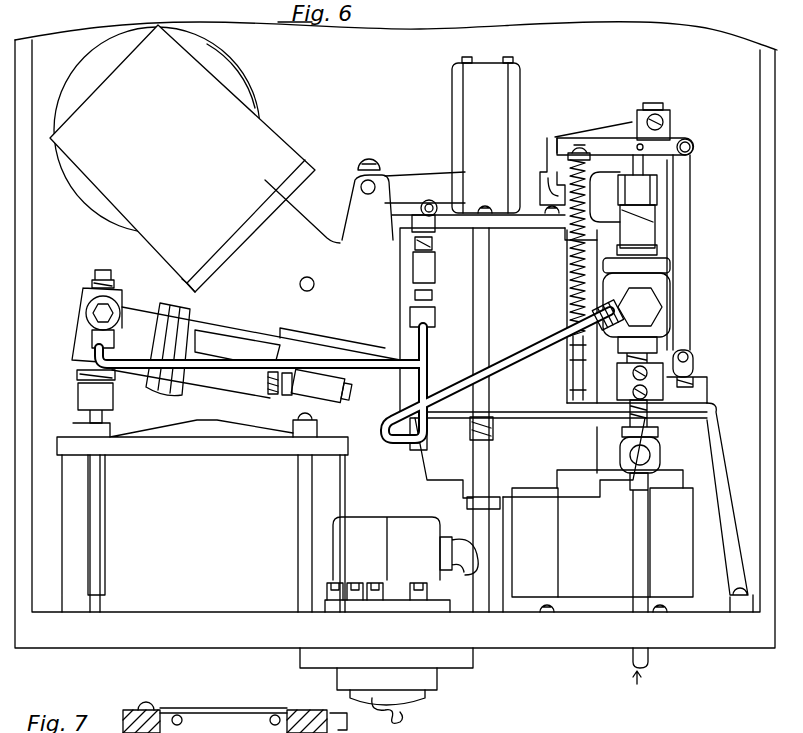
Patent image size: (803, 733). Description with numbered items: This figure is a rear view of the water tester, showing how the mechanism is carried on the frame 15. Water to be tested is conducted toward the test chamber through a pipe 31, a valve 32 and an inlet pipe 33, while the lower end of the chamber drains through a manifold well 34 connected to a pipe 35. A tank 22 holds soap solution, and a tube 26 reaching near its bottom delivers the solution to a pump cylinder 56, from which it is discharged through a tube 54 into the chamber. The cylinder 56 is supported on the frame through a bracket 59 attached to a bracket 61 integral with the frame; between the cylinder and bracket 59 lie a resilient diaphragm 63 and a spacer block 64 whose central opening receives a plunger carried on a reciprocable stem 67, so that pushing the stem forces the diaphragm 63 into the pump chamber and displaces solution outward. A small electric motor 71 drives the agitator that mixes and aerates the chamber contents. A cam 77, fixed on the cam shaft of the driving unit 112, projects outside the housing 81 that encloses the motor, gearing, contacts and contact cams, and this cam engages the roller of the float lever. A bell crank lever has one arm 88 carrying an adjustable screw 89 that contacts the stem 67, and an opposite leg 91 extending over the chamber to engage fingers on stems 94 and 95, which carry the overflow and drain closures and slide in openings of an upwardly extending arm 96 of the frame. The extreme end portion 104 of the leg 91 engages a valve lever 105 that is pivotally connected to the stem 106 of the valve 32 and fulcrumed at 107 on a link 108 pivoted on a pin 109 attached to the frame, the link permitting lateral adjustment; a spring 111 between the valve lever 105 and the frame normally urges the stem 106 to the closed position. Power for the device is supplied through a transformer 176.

The frame 15 is at (713, 480).
The tank 22 is at (193, 537).
The tube 26 is at (107, 500).
The pipe 31 is at (445, 397).
The valve 32 is at (662, 302).
The inlet pipe 33 is at (648, 663).
The manifold well 34 is at (527, 458).
The pipe 35 is at (402, 715).
The tube 54 is at (430, 198).
The pump cylinder 56 is at (107, 346).
The bracket 59 is at (240, 377).
The bracket 61 is at (302, 235).
The resilient diaphragm 63 is at (157, 395).
The spacer block 64 is at (165, 392).
The reciprocable stem 67 is at (270, 390).
The electric motor 71 is at (623, 205).
The cam 77 is at (222, 67).
The housing 81 is at (182, 158).
The arm 88 is at (321, 385).
The adjustable screw 89 is at (290, 392).
The leg 91 is at (395, 182).
The stem 94 is at (515, 60).
The stem 95 is at (462, 58).
The arm 96 is at (486, 138).
The end portion 104 is at (545, 182).
The valve lever 105 is at (600, 143).
The stem 106 is at (635, 128).
The fulcrum 107 is at (692, 138).
The link 108 is at (685, 193).
The pin 109 is at (693, 365).
The spring 111 is at (568, 247).
The driving unit 112 is at (286, 116).
The transformer 176 is at (602, 533).